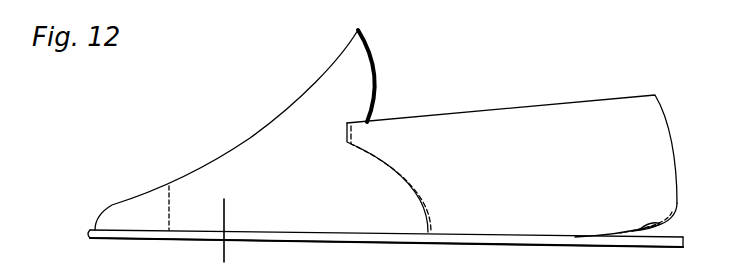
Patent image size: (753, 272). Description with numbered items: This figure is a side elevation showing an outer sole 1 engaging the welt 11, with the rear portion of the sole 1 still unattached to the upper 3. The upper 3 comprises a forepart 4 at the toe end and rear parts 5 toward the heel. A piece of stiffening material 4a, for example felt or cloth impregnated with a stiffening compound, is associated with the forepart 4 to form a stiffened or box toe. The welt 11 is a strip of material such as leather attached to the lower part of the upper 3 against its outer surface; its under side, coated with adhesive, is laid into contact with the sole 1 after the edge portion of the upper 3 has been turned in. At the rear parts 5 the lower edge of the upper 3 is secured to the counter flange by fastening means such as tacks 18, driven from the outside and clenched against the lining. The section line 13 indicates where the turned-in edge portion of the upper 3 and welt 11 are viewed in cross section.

The outer sole 1 is at (353, 243).
The welt 11 is at (350, 232).
The section line 13- 13 is at (224, 201).
The upper 3 is at (428, 88).
The forepart 4 is at (278, 128).
The stiffening material 4a is at (172, 194).
The rear parts 5 is at (557, 112).
The tacks 18 is at (655, 231).